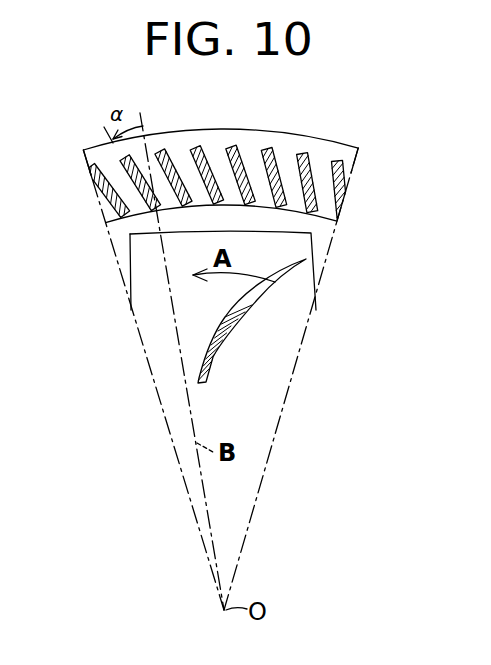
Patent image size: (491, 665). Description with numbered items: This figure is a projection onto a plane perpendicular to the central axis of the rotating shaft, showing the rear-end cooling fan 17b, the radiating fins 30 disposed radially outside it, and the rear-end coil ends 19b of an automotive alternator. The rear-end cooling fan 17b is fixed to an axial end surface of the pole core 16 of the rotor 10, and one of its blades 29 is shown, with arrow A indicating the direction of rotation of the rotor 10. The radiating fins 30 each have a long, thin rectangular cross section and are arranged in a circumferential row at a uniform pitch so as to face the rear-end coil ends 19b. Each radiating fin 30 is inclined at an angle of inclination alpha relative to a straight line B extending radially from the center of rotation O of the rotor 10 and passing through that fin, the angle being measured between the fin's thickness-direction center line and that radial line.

The rotor 10 is at (131, 262).
The pole core 16 is at (141, 312).
The rear-end coil ends 19b is at (325, 146).
The radiating fins 30 is at (345, 175).
The blade 29 is at (237, 318).
The rear-end cooling fan 17b is at (222, 347).